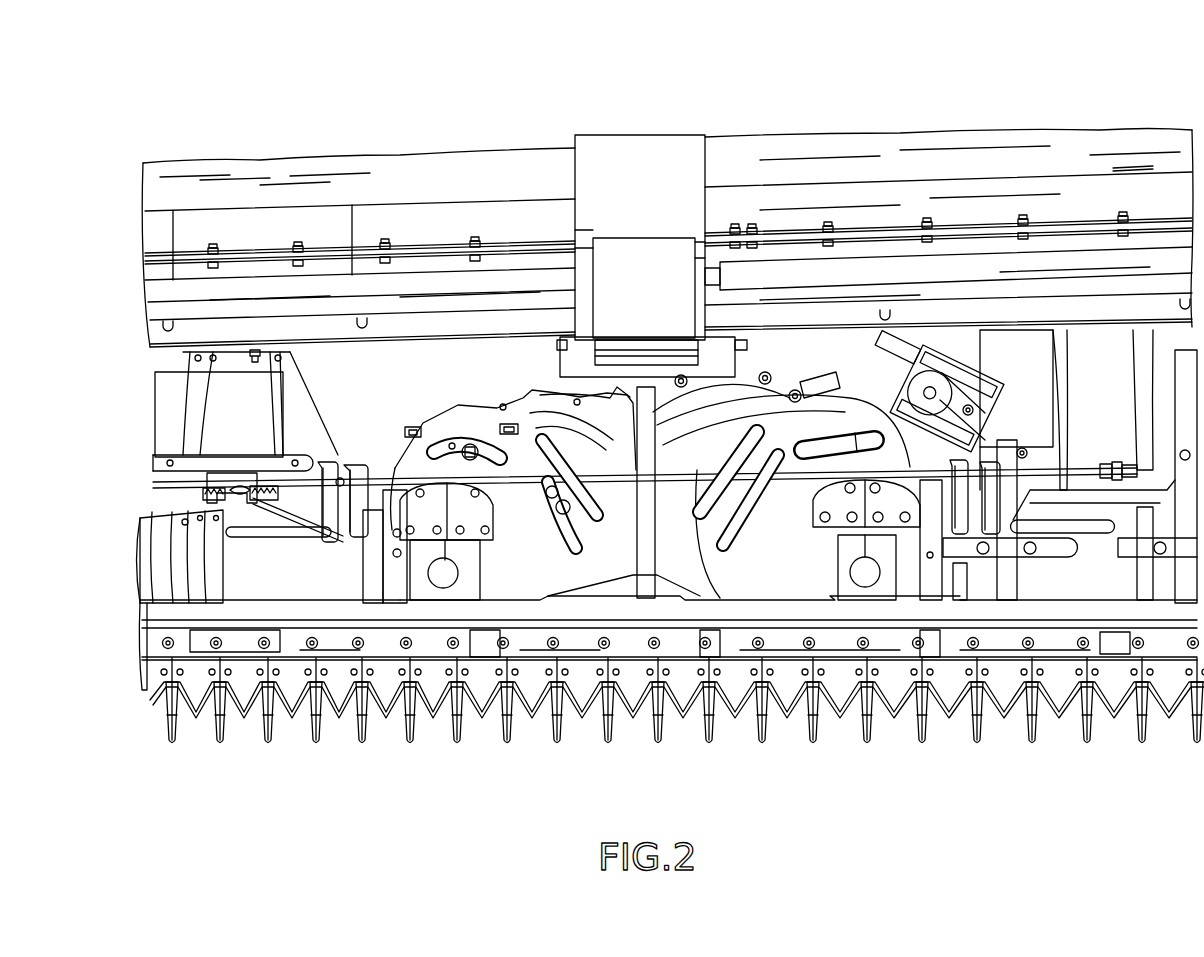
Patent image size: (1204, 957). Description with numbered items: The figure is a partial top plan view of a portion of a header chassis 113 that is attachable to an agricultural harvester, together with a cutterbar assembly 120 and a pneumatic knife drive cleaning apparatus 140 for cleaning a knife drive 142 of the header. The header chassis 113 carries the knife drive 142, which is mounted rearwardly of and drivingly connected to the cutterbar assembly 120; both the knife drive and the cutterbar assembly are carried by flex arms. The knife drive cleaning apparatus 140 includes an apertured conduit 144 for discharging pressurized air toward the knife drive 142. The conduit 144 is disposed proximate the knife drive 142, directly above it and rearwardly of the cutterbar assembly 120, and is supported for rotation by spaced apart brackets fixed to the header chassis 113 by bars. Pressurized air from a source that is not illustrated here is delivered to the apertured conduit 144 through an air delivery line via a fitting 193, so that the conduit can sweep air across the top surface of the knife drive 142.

The header chassis 113 is at (906, 104).
The cutterbar assembly 120 is at (889, 746).
The knife drive cleaning apparatus 140 is at (340, 402).
The knife drive 142 is at (510, 389).
The apertured pressurized air dispensing conduit 144 is at (679, 492).
The fitting 193 is at (1120, 462).